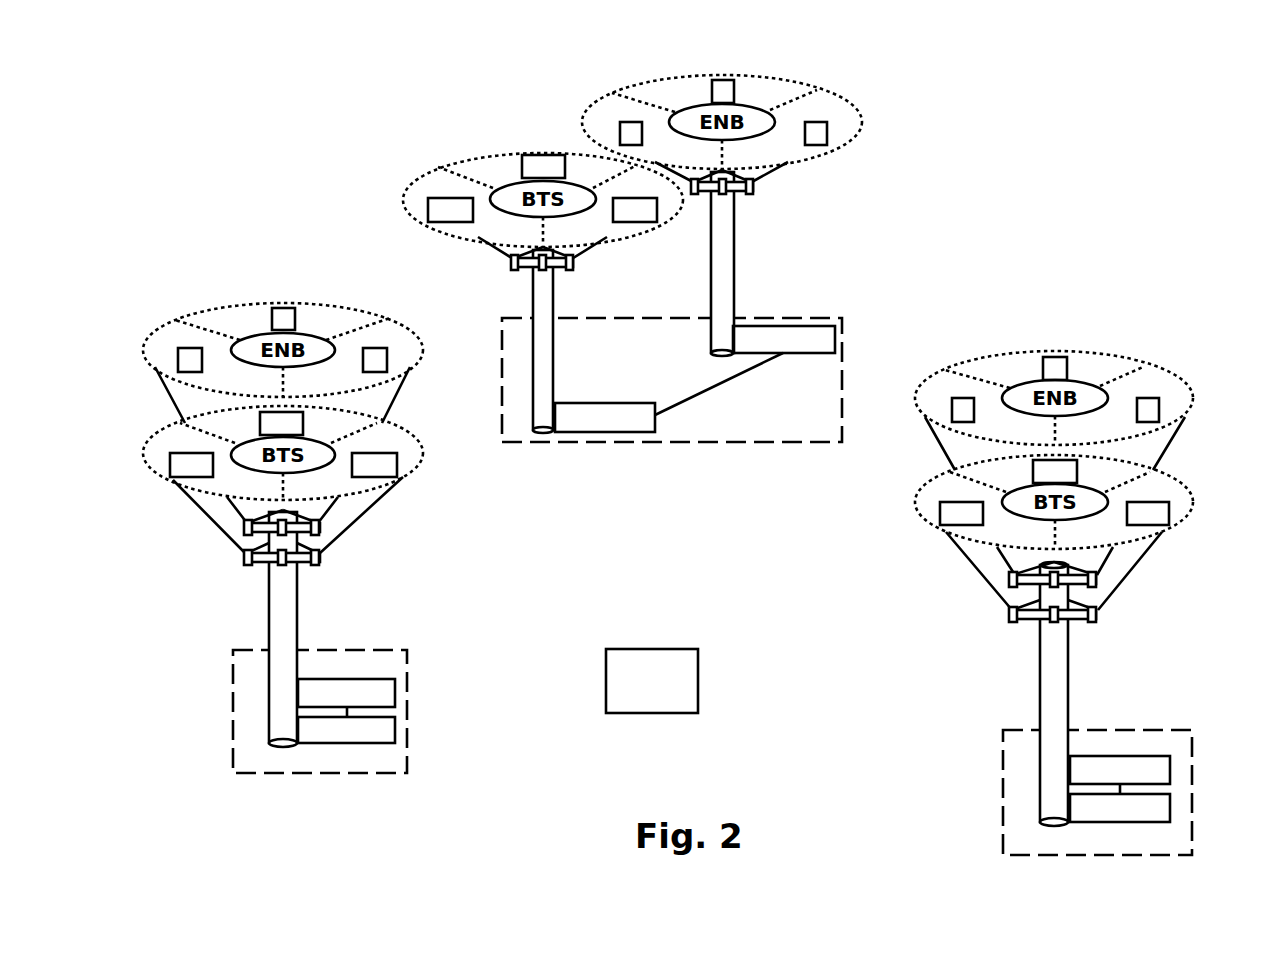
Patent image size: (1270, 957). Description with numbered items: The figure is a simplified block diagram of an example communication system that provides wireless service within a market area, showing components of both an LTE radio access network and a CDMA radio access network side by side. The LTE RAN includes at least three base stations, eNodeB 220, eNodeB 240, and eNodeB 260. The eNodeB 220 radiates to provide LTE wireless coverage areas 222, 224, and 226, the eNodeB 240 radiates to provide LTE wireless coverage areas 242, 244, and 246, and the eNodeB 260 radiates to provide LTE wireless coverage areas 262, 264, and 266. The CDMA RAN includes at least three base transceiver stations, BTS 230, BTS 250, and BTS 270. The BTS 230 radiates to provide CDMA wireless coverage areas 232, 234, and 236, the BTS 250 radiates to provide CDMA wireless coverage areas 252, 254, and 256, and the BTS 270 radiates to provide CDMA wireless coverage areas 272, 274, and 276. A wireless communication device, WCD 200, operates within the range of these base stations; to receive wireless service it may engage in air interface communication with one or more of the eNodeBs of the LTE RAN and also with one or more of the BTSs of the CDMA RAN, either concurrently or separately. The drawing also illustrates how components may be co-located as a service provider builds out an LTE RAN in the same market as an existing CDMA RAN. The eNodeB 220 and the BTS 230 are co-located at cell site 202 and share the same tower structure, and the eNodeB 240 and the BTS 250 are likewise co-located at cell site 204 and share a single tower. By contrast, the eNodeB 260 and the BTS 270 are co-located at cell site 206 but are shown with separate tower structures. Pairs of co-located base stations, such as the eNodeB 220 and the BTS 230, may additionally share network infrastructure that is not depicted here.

The WCD 200 is at (652, 715).
The cell site 202 is at (233, 710).
The cell site 204 is at (1003, 793).
The cell site 206 is at (502, 332).
The eNodeB 220 is at (395, 690).
The LTE wireless coverage area 222 is at (384, 318).
The LTE wireless coverage area 224 is at (230, 304).
The LTE wireless coverage area 226 is at (160, 328).
The base transceiver station 230 is at (395, 725).
The CDMA wireless coverage area 232 is at (403, 477).
The CDMA wireless coverage area 234 is at (330, 408).
The CDMA wireless coverage area 236 is at (150, 442).
The eNodeB 240 is at (1172, 770).
The LTE wireless coverage area 242 is at (1193, 388).
The LTE wireless coverage area 244 is at (1018, 352).
The LTE wireless coverage area 246 is at (917, 407).
The base transceiver station 250 is at (1172, 807).
The CDMA wireless coverage area 252 is at (1193, 502).
The CDMA wireless coverage area 254 is at (1097, 457).
The CDMA wireless coverage area 256 is at (917, 502).
The eNodeB 260 is at (836, 338).
The LTE wireless coverage area 262 is at (610, 95).
The LTE wireless coverage area 264 is at (788, 82).
The LTE wireless coverage area 266 is at (855, 108).
The base transceiver station 270 is at (603, 433).
The CDMA wireless coverage area 272 is at (420, 218).
The CDMA wireless coverage area 274 is at (468, 162).
The CDMA wireless coverage area 276 is at (633, 235).